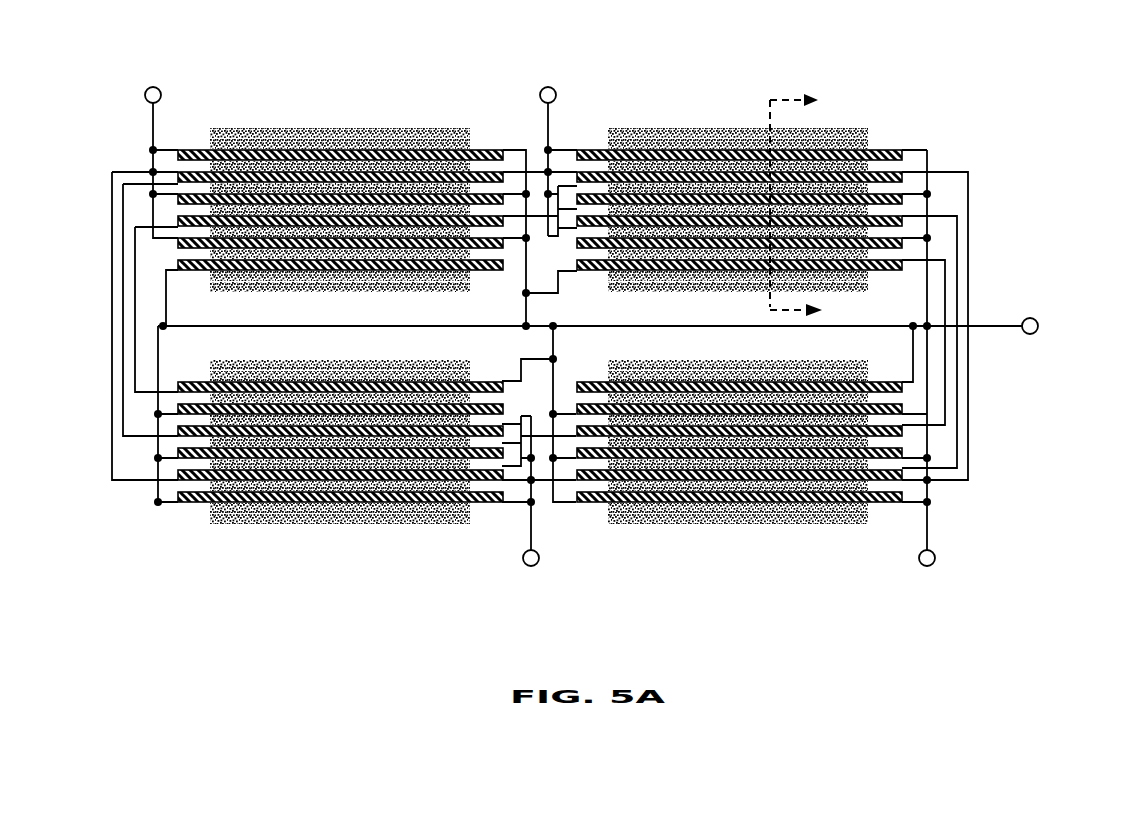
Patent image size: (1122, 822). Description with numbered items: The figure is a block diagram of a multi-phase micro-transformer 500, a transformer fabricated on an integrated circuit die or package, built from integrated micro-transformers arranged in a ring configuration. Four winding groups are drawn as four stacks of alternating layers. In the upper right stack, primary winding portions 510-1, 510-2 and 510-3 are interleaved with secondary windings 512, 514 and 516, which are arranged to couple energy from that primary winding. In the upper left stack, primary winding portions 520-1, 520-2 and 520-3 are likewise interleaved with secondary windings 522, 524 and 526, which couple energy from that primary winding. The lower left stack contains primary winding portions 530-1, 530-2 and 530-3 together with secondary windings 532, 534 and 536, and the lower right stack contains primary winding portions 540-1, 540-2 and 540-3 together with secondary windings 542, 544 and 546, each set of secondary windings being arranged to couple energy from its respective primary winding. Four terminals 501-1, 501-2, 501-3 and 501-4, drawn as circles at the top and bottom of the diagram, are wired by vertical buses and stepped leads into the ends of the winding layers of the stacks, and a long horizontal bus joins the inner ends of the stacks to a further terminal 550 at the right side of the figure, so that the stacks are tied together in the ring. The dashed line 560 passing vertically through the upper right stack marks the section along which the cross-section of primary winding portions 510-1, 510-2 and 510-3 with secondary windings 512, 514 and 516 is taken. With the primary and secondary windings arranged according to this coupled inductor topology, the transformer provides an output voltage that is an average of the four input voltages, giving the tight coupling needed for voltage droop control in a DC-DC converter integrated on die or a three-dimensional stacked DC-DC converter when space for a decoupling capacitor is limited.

The capacitor assembly 500 is at (816, 627).
The terminal 501-1 is at (556, 92).
The terminal 501-2 is at (162, 92).
The terminal 501-3 is at (534, 567).
The terminal 501-4 is at (930, 567).
The primary winding 510-1 is at (902, 150).
The primary winding 510-2 is at (902, 194).
The primary winding 510-3 is at (902, 238).
The secondary winding 512 is at (902, 172).
The secondary winding 514 is at (902, 216).
The secondary winding 516 is at (902, 260).
The primary winding 520-1 is at (178, 150).
The primary winding 520-2 is at (178, 194).
The primary winding 520-3 is at (178, 238).
The secondary winding 522 is at (178, 172).
The secondary winding 524 is at (178, 216).
The secondary winding 526 is at (178, 260).
The primary winding 530-1 is at (178, 492).
The primary winding 530-2 is at (178, 448).
The primary winding 530-3 is at (178, 404).
The secondary winding 532 is at (178, 470).
The secondary winding 534 is at (178, 426).
The secondary winding 536 is at (178, 382).
The primary winding 540-1 is at (902, 492).
The primary winding 540-2 is at (902, 448).
The primary winding 540-3 is at (902, 404).
The secondary winding 542 is at (902, 470).
The secondary winding 544 is at (902, 426).
The secondary winding 546 is at (902, 382).
The common terminal 550 is at (1037, 320).
The line 560 is at (774, 98).